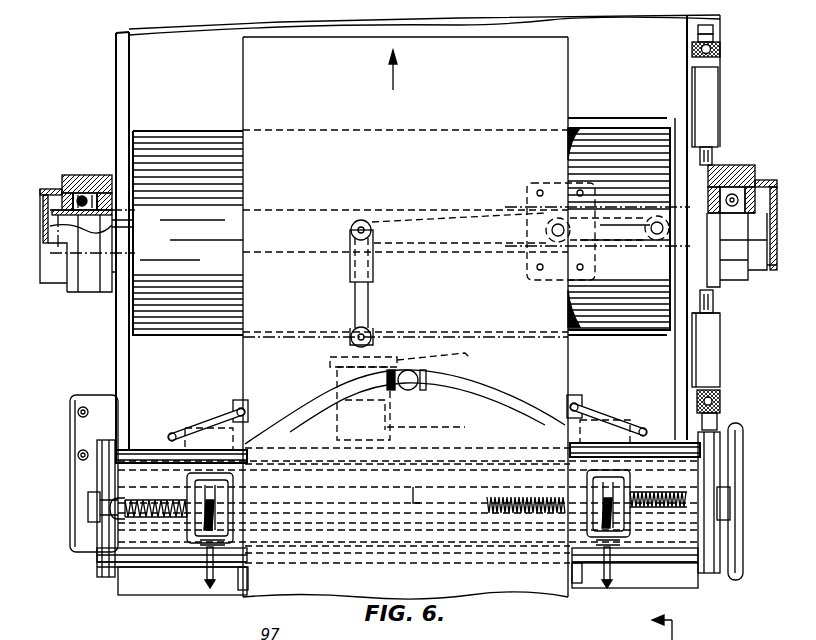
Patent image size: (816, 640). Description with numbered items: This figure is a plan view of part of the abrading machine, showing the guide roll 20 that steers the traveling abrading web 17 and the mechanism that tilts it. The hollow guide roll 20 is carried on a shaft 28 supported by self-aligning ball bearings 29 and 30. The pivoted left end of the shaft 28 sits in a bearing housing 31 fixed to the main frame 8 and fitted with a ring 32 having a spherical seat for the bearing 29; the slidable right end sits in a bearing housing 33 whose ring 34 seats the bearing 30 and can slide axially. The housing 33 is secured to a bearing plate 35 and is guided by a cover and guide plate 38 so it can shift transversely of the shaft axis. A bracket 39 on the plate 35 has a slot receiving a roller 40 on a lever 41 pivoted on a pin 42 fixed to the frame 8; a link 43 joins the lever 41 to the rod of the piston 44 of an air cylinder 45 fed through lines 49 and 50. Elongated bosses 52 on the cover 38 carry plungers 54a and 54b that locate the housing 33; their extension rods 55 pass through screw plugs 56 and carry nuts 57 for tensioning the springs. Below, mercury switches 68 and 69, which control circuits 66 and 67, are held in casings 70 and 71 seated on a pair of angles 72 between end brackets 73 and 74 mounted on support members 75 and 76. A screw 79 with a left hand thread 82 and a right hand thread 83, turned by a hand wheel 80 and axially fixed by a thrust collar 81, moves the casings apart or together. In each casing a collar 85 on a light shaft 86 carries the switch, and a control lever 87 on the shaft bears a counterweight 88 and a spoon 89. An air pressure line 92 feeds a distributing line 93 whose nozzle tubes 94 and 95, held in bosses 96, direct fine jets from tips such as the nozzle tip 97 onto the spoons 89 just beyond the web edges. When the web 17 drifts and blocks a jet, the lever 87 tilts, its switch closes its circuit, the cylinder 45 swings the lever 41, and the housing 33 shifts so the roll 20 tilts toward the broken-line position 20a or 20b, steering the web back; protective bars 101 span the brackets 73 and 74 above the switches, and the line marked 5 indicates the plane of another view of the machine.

The section line for FIG. 5 is at (672, 625).
The main frame 8 is at (116, 57).
The abrading web 17 is at (243, 58).
The guide roll 20 is at (186, 147).
The tilted position of guide roll 20a is at (643, 118).
The tilted position of guide roll 20b is at (638, 335).
The shaft 28 is at (44, 242).
The ball bearing 29 is at (86, 176).
The ball bearing 30 is at (748, 187).
The bearing housing 31 is at (80, 290).
The ring 32 is at (78, 178).
The bearing housing 33 is at (720, 270).
The ring 34 is at (735, 166).
The bearing plate 35 is at (735, 255).
The cover and guide plate 38 is at (722, 338).
The bracket 39 is at (645, 213).
The roller 40 is at (645, 229).
The lever 41 is at (486, 213).
The pin 42 is at (527, 262).
The link 43 is at (378, 302).
The piston 44 is at (340, 428).
The fluid actuated cylinder 45 is at (333, 372).
The air line 49 is at (445, 428).
The air line 50 is at (470, 355).
The elongated bosses 52 is at (710, 80).
The plunger 54a is at (713, 305).
The plunger 54b is at (714, 152).
The plunger extension rods 55 is at (713, 27).
The screw plugs 56 is at (720, 49).
The nuts 57 is at (713, 37).
The circuit 66 is at (211, 590).
The circuit 67 is at (608, 590).
The mercury switch 68 is at (190, 485).
The mercury switch 69 is at (630, 482).
The casing 70 is at (195, 530).
The casing 71 is at (630, 525).
The angles 72 is at (408, 520).
The end bracket 73 is at (97, 476).
The end bracket 74 is at (720, 465).
The support member 75 is at (97, 535).
The support member 76 is at (730, 522).
The screw member 79 is at (470, 515).
The hand wheel 80 is at (745, 568).
The thrust collar 81 is at (88, 506).
The left hand thread 82 is at (158, 562).
The right hand thread 83 is at (660, 562).
The collar 85 is at (200, 548).
The shaft 86 is at (250, 503).
The control lever 87 is at (250, 532).
The counterweight 88 is at (243, 592).
The spoon 89 is at (240, 400).
The air pressure line 92 is at (410, 391).
The distributing line 93 is at (310, 408).
The nozzle tube 94 is at (172, 433).
The nozzle tube 95 is at (643, 428).
The boss 96 is at (200, 425).
The nozzle tip 97 is at (235, 410).
The bars 101 is at (138, 450).